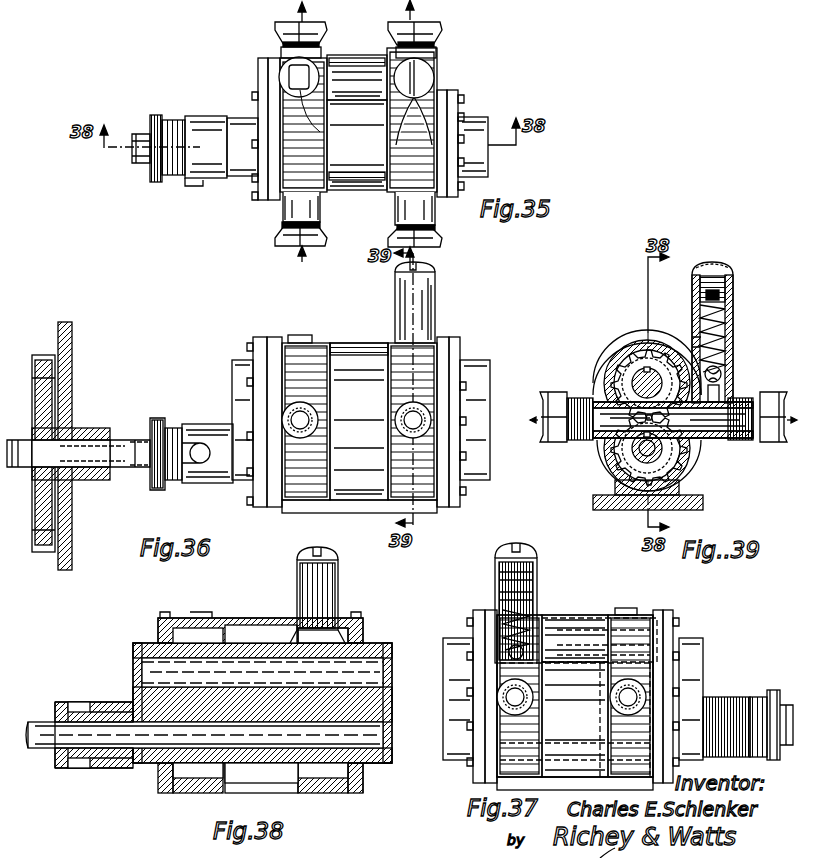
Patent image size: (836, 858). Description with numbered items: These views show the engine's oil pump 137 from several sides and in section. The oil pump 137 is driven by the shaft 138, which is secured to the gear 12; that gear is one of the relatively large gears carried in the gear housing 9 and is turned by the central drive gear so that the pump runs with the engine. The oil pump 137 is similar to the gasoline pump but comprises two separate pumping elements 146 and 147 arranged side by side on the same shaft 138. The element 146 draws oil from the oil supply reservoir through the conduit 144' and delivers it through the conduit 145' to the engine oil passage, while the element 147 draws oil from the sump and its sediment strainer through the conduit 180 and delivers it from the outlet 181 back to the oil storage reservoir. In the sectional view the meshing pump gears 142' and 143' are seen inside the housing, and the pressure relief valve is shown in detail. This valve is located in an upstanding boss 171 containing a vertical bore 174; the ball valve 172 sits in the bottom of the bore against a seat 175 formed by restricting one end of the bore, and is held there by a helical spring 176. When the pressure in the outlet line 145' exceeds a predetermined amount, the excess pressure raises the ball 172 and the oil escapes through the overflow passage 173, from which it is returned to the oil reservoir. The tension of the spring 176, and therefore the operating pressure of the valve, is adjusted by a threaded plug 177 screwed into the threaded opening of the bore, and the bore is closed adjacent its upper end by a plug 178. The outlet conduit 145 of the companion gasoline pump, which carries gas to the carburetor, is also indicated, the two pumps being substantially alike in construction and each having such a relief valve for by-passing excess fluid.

In FIG. 36, the gear housing 9 is at (72, 345).
In FIG. 36, the gear 12 is at (42, 355).
In FIG. 35, the oil pump 137 is at (364, 180).
In FIG. 36, the oil pump 137 is at (356, 340).
In FIG. 39, the oil pump 137 is at (615, 357).
In FIG. 38, the oil pump 137 is at (258, 642).
In FIG. 37, the oil pump 137 is at (465, 630).
In FIG. 35, the shaft 138 is at (145, 131).
In FIG. 36, the shaft 138 is at (136, 478).
In FIG. 39, the shaft 138 is at (655, 455).
In FIG. 38, the shaft 138 is at (50, 765).
In FIG. 37, the shaft 138 is at (787, 720).
In FIG. 39, the driving gear 142' is at (622, 384).
In FIG. 38, the driving gear 142' is at (340, 614).
In FIG. 39, the driven gear 143' is at (622, 452).
In FIG. 38, the driven gear 143' is at (384, 784).
In FIG. 35, the conduit 144' is at (443, 243).
In FIG. 36, the conduit 144' is at (450, 453).
In FIG. 39, the conduit 144' is at (548, 427).
In FIG. 39, the outlet conduit 145 is at (762, 432).
In FIG. 37, the outlet conduit 145 is at (471, 696).
In FIG. 35, the conduit 145' is at (447, 22).
In FIG. 35, the pumping element 146 is at (410, 145).
In FIG. 36, the pumping element 146 is at (420, 360).
In FIG. 39, the pumping element 146 is at (597, 400).
In FIG. 38, the pumping element 146 is at (330, 786).
In FIG. 37, the pumping element 146 is at (490, 665).
In FIG. 35, the pumping element 147 is at (300, 147).
In FIG. 36, the pumping element 147 is at (297, 362).
In FIG. 38, the pumping element 147 is at (203, 758).
In FIG. 37, the pumping element 147 is at (660, 668).
In FIG. 35, the upstanding boss 171 is at (433, 58).
In FIG. 36, the upstanding boss 171 is at (435, 300).
In FIG. 39, the upstanding boss 171 is at (735, 328).
In FIG. 38, the upstanding boss 171 is at (340, 580).
In FIG. 37, the upstanding boss 171 is at (540, 582).
In FIG. 39, the ball valve 172 is at (722, 372).
In FIG. 37, the ball valve 172 is at (537, 625).
In FIG. 35, the overflow passage 173 is at (355, 62).
In FIG. 36, the overflow passage 173 is at (343, 350).
In FIG. 39, the overflow passage 173 is at (690, 340).
In FIG. 38, the overflow passage 173 is at (237, 630).
In FIG. 37, the overflow passage 173 is at (590, 615).
In FIG. 39, the vertical bore 174 is at (735, 292).
In FIG. 37, the vertical bore 174 is at (497, 602).
In FIG. 39, the seat 175 is at (735, 379).
In FIG. 39, the helical spring 176 is at (700, 310).
In FIG. 37, the helical spring 176 is at (537, 608).
In FIG. 39, the threaded plug 177 is at (735, 296).
In FIG. 37, the threaded plug 177 is at (497, 574).
In FIG. 35, the plug 178 is at (425, 76).
In FIG. 36, the plug 178 is at (430, 268).
In FIG. 39, the plug 178 is at (720, 263).
In FIG. 38, the plug 178 is at (306, 557).
In FIG. 37, the plug 178 is at (508, 550).
In FIG. 35, the conduit 180 is at (290, 238).
In FIG. 36, the conduit 180 is at (300, 436).
In FIG. 35, the conduit 181 is at (293, 28).
In FIG. 37, the conduit 181 is at (640, 695).